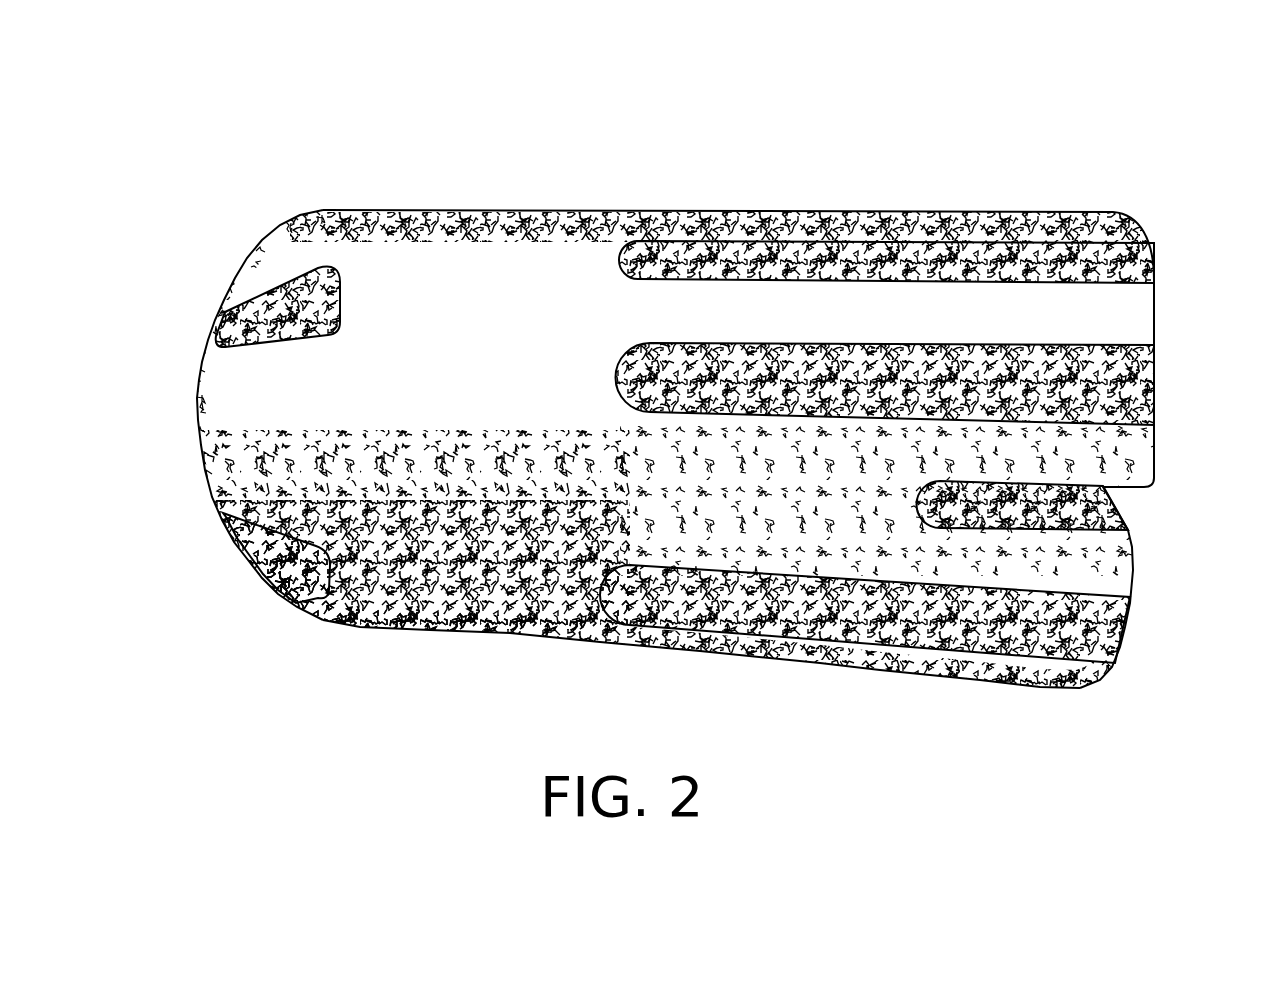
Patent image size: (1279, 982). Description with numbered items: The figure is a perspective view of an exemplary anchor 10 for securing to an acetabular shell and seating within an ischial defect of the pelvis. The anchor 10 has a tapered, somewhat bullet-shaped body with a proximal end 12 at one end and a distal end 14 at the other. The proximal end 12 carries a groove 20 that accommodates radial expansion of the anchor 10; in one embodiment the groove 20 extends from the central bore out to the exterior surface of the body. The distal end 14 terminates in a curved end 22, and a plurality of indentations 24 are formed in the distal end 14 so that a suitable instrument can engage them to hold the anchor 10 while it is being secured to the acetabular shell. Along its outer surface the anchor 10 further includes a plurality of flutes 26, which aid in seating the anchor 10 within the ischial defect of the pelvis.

The anchor 10 is at (1040, 97).
The proximal end 12 is at (1106, 175).
The distal end 14 is at (258, 140).
The groove 20 is at (1090, 503).
The curved end 22 is at (237, 402).
The indentations 24 is at (240, 300).
The flutes 26 is at (742, 257).